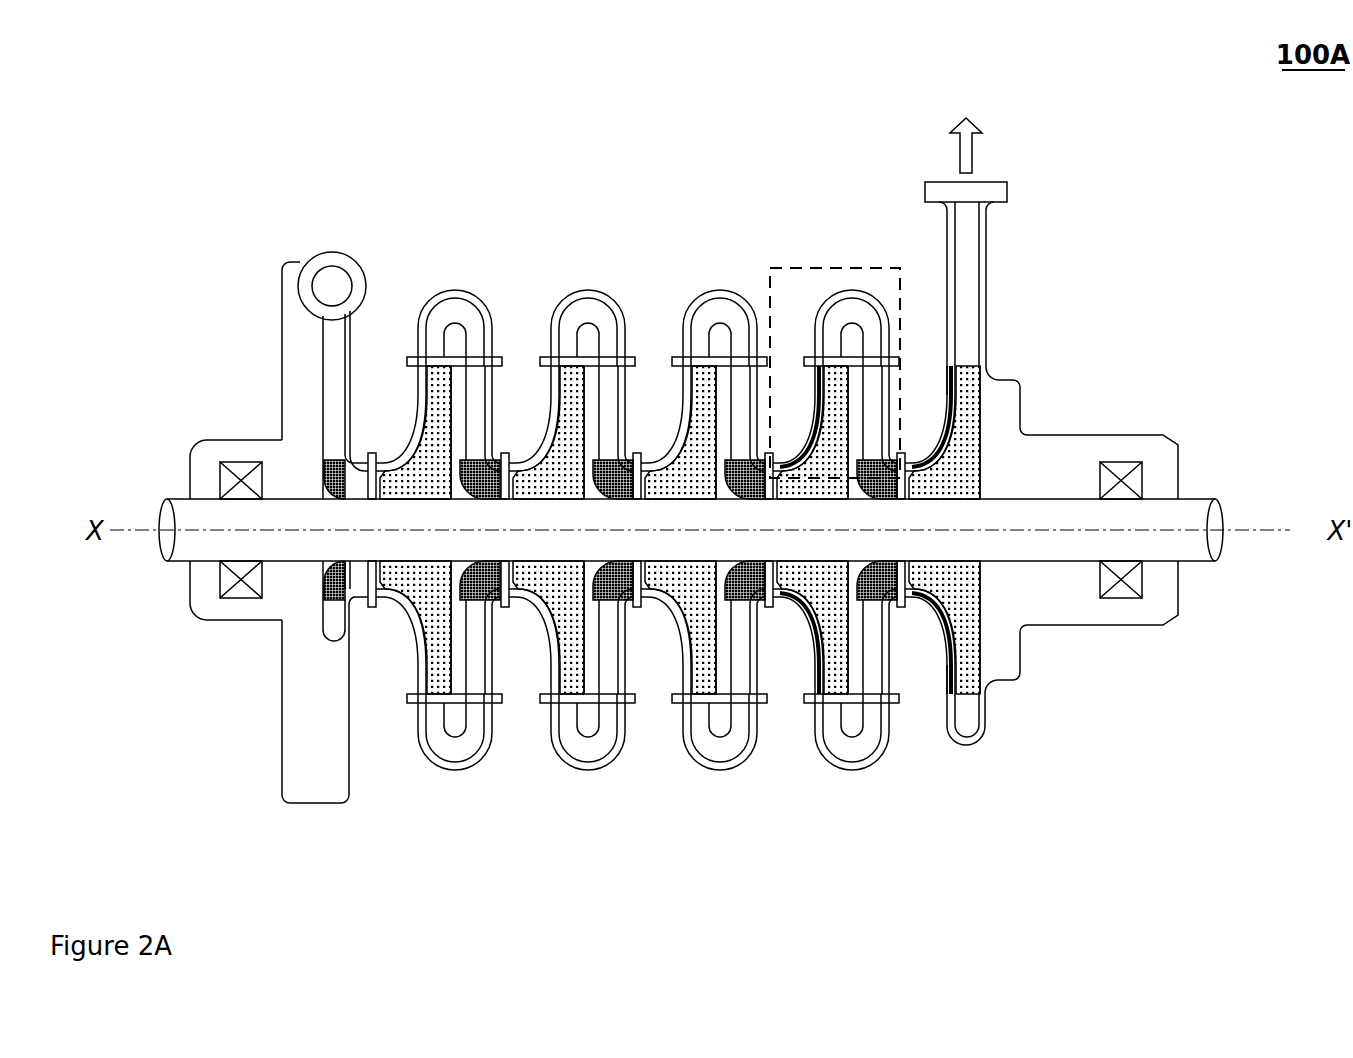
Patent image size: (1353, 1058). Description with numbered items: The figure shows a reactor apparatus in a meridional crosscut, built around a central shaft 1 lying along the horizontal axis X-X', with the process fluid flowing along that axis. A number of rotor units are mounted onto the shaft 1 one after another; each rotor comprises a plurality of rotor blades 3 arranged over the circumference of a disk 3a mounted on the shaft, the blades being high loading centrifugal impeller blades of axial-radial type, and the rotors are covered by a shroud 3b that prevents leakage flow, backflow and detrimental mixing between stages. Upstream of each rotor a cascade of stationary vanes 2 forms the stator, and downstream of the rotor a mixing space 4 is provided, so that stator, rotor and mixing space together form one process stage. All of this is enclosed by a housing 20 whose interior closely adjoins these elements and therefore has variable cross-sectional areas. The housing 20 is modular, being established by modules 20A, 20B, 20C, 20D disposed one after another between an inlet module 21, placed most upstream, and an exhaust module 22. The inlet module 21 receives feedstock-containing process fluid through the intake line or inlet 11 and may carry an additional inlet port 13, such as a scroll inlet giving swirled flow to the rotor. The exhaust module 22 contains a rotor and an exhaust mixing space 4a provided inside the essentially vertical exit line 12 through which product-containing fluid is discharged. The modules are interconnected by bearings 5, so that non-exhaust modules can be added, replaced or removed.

The central shaft 1 is at (187, 552).
The stationary vanes 2 is at (664, 698).
The rotor blades 3 is at (535, 709).
The disk 3a is at (403, 605).
The shroud 3b is at (958, 418).
The mixing space 4 is at (628, 327).
The exhaust mixing space 4a is at (968, 274).
The bearing 5 is at (533, 356).
The inlet 11 is at (325, 288).
The exit line 12 is at (983, 178).
The additional inlet port 13 is at (289, 685).
The housing 20 is at (301, 325).
The module 20A is at (440, 283).
The module 20B is at (589, 519).
The module 20C is at (690, 538).
The module 20D is at (848, 282).
The inlet module 21 is at (297, 363).
The exhaust module 22 is at (985, 316).